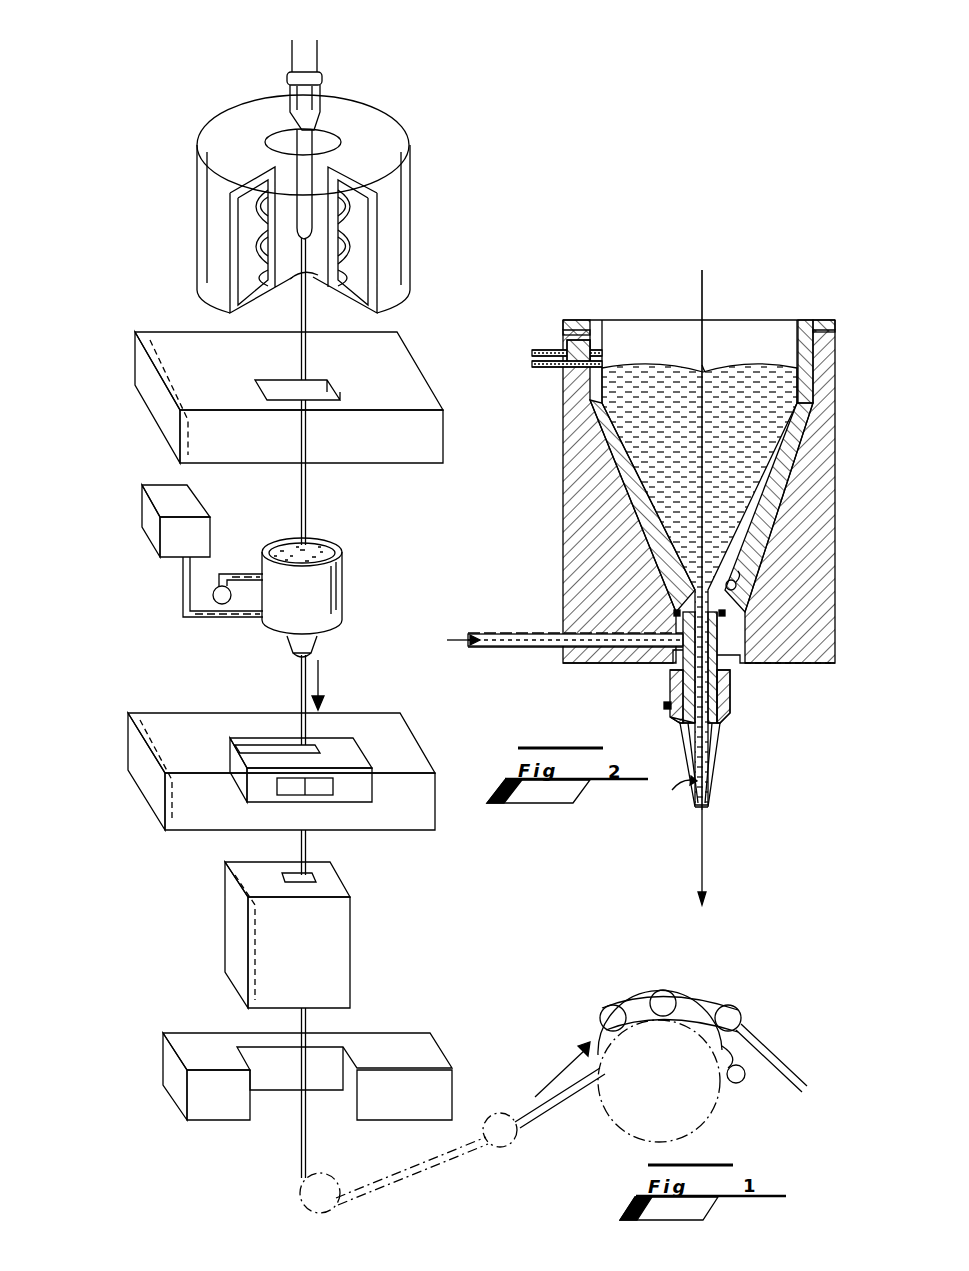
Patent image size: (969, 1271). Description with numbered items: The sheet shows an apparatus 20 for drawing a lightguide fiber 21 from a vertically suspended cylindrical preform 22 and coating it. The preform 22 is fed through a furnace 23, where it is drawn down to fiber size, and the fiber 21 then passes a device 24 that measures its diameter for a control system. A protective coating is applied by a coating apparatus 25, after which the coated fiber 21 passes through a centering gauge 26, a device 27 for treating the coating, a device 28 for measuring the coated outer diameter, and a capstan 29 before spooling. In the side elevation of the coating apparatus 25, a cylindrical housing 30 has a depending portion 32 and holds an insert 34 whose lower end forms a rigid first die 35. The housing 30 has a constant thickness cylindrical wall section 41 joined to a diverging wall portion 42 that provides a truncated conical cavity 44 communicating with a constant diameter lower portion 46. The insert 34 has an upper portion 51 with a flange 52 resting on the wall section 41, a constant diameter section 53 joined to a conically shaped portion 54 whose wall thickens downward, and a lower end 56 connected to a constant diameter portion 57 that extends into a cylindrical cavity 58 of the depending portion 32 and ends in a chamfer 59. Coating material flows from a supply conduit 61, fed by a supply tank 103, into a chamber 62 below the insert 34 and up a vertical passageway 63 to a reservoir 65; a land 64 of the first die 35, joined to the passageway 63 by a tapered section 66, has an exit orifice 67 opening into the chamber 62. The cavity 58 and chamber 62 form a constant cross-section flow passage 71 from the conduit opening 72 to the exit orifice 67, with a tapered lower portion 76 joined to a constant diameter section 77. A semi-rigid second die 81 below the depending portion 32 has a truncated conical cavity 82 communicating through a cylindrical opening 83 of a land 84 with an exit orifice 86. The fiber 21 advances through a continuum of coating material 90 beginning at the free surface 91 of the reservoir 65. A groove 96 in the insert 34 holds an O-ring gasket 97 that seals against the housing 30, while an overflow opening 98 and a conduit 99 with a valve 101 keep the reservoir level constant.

In FIG. 2, the apparatus 20 is at (487, 246).
In FIG. 1, the lightguide fiber 21 is at (310, 501).
In FIG. 2, the lightguide fiber 21 is at (703, 300).
In FIG. 1, the preform 22 is at (318, 57).
In FIG. 1, the furnace 23 is at (412, 181).
In FIG. 1, the device 24 is at (410, 350).
In FIG. 1, the apparatus 25 is at (352, 580).
In FIG. 2, the apparatus 25 is at (538, 542).
In FIG. 1, the centering gauge 26 is at (357, 713).
In FIG. 1, the device 27 is at (353, 914).
In FIG. 1, the device 28 is at (381, 1033).
In FIG. 1, the capstan 29 is at (688, 991).
In FIG. 2, the housing 30 is at (845, 348).
In FIG. 2, the depending portion 32 is at (735, 700).
In FIG. 2, the insert 34 is at (797, 440).
In FIG. 2, the first die 35 is at (668, 714).
In FIG. 2, the cylindrical wall section 41 is at (816, 362).
In FIG. 2, the diverging wall portion 42 is at (833, 510).
In FIG. 2, the cavity 44 is at (736, 588).
In FIG. 2, the lower portion 46 is at (672, 633).
In FIG. 2, the upper portion 51 is at (795, 340).
In FIG. 2, the flange 52 is at (818, 325).
In FIG. 2, the constant diameter section 53 is at (775, 368).
In FIG. 2, the conically shaped portion 54 is at (778, 476).
In FIG. 2, the lower end 56 is at (716, 632).
In FIG. 2, the constant diameter portion 57 is at (728, 648).
In FIG. 2, the cylindrical cavity 58 is at (726, 713).
In FIG. 2, the chamfer 59 is at (684, 733).
In FIG. 1, the supply conduit 61 is at (252, 620).
In FIG. 2, the supply conduit 61 is at (526, 651).
In FIG. 2, the chamber 62 is at (702, 750).
In FIG. 2, the passageway 63 is at (672, 681).
In FIG. 2, the land 64 is at (722, 723).
In FIG. 2, the reservoir 65 is at (684, 345).
In FIG. 2, the tapered section 66 is at (674, 722).
In FIG. 2, the exit orifice 67 is at (712, 748).
In FIG. 2, the flow passage 71 is at (664, 706).
In FIG. 2, the opening 72 is at (650, 667).
In FIG. 2, the lower portion 76 is at (720, 729).
In FIG. 2, the constant diameter section 77 is at (690, 740).
In FIG. 2, the second die 81 is at (685, 857).
In FIG. 2, the cavity 82 is at (708, 780).
In FIG. 2, the cylindrical opening 83 is at (710, 812).
In FIG. 2, the land 84 is at (697, 806).
In FIG. 2, the exit orifice 86 is at (706, 820).
In FIG. 2, the coating material 90 is at (642, 385).
In FIG. 2, the free surface 91 is at (668, 365).
In FIG. 2, the groove 96 is at (672, 612).
In FIG. 2, the O-ring gasket 97 is at (724, 614).
In FIG. 2, the opening 98 is at (603, 358).
In FIG. 1, the conduit 99 is at (243, 574).
In FIG. 2, the conduit 99 is at (545, 365).
In FIG. 1, the valve 101 is at (216, 604).
In FIG. 1, the supply tank 103 is at (166, 560).